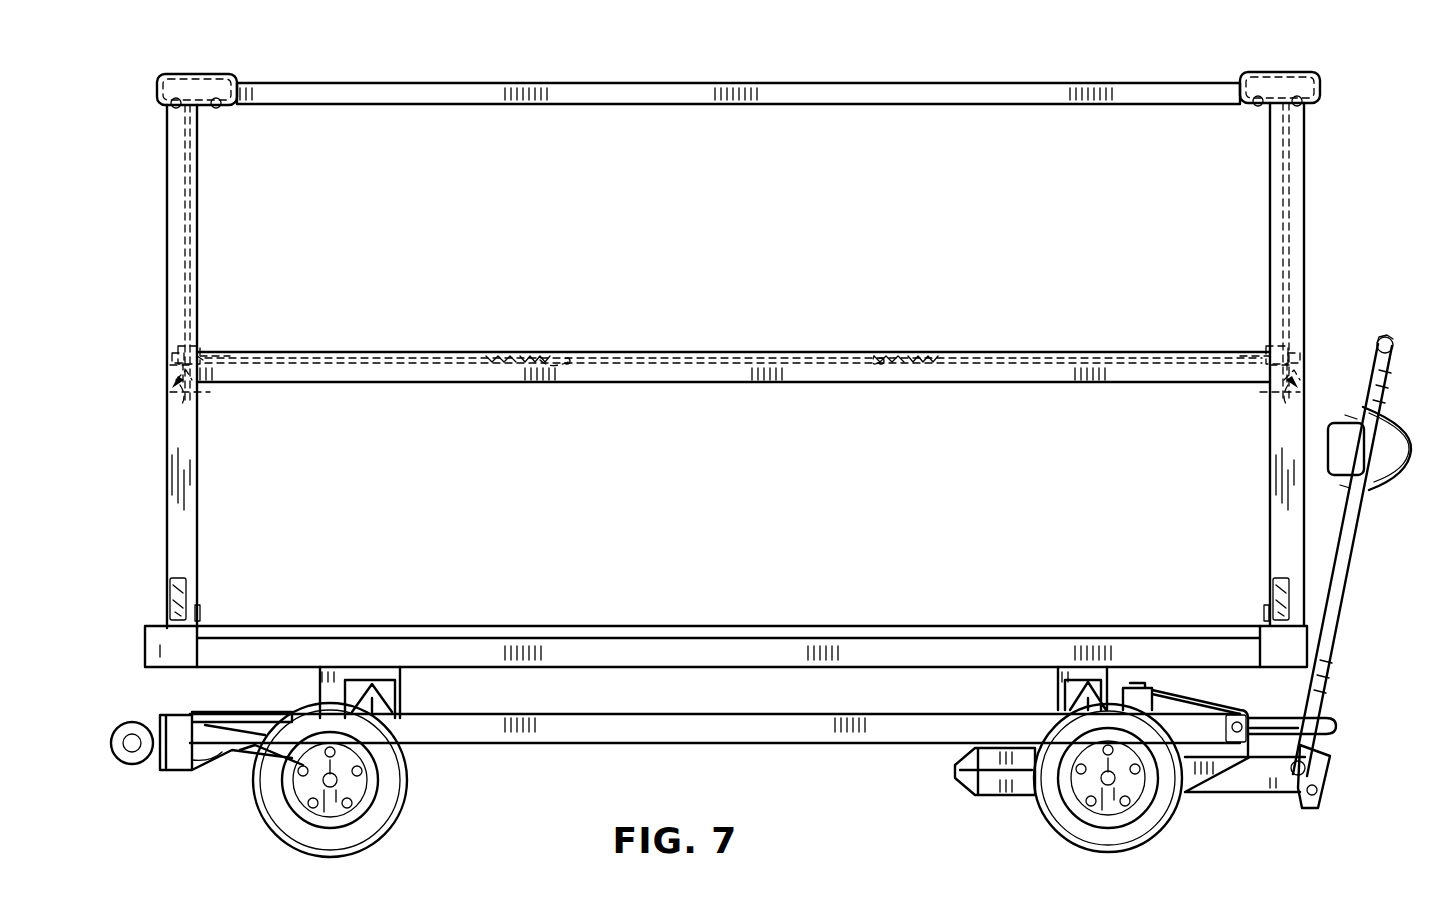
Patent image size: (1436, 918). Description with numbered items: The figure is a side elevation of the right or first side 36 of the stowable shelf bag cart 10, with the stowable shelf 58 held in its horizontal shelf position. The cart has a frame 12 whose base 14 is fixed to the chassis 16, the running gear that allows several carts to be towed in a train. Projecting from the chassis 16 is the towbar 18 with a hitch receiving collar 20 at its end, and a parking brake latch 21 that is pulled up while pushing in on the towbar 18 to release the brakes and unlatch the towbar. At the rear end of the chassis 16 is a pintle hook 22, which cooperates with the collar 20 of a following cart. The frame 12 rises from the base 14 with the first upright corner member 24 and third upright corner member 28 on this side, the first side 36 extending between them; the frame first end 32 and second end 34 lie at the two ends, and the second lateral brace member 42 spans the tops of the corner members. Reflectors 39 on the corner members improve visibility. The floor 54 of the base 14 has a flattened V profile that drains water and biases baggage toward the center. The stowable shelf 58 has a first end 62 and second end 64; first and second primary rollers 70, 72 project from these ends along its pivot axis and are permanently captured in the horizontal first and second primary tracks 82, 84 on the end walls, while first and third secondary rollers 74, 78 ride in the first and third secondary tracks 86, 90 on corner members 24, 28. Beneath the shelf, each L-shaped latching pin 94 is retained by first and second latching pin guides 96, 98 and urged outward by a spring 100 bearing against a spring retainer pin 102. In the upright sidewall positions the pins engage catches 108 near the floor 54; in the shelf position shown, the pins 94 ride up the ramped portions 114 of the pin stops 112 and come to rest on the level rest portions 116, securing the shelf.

The stowable shelf bag cart 10 is at (770, 90).
The frame 12 is at (156, 500).
The base 14 is at (228, 682).
The chassis 16 is at (920, 778).
The towbar 18 is at (1330, 635).
The collar 20 is at (1380, 335).
The parking brake latch 21 is at (1336, 726).
The pintle hook 22 is at (135, 766).
The first upright corner member 24 is at (1300, 208).
The third upright corner member 28 is at (170, 217).
The first end 32 is at (1312, 364).
The second end 34 is at (180, 366).
The first side 36 is at (738, 63).
The reflectors 39 is at (165, 600).
The second lateral brace member 42 is at (920, 82).
The floor 54 is at (678, 618).
The stowable shelf 58 is at (733, 331).
The first end 62 is at (1256, 335).
The second end 64 is at (226, 340).
The first primary roller 70 is at (1300, 345).
The second primary roller 72 is at (175, 340).
The first secondary roller 74 is at (1262, 395).
The third secondary roller 78 is at (212, 392).
The first primary track 82 is at (1295, 365).
The second primary track 84 is at (168, 364).
The first secondary track 86 is at (1285, 232).
The third secondary track 90 is at (190, 220).
The latching pin 94 is at (385, 353).
The first latching pin guide 96 is at (563, 356).
The second latching pin guide 98 is at (258, 357).
The spring 100 is at (528, 353).
The spring retainer pin 102 is at (490, 356).
The latching pin catch 108 is at (205, 605).
The pin stop 112 is at (172, 388).
The ramped portion 114 is at (190, 405).
The rest portion 116 is at (200, 340).